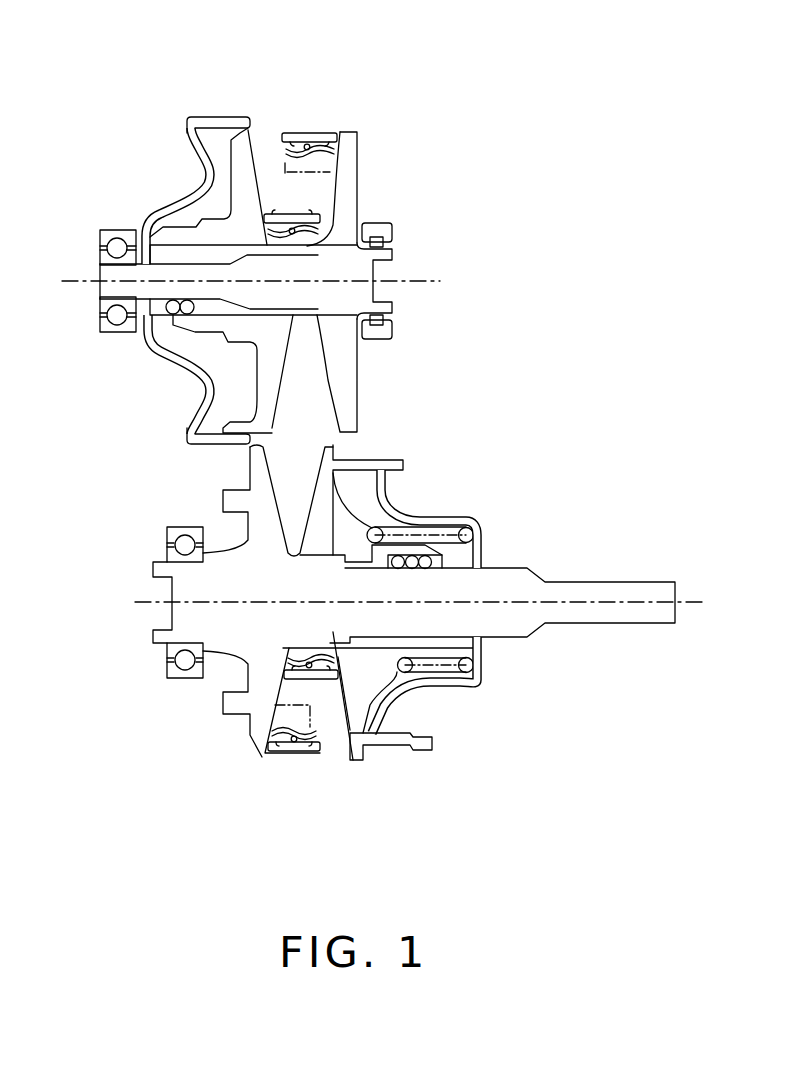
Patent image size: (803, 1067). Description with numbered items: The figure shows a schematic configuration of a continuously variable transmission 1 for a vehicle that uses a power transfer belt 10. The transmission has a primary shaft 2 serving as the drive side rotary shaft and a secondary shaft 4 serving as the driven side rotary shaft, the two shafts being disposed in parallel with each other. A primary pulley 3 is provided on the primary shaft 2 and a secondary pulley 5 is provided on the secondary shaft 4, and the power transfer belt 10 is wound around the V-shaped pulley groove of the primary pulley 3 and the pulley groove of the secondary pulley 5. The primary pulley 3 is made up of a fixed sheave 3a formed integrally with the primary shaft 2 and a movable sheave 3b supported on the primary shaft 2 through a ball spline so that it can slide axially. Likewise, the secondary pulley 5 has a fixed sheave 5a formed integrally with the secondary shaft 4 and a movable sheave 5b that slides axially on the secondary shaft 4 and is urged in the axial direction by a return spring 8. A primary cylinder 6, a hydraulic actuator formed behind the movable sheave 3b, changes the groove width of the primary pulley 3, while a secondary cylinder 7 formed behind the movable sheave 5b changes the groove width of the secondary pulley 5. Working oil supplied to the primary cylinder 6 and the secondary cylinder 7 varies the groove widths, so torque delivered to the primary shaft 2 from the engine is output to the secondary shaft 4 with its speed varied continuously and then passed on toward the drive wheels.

The continuously variable transmission 1 is at (474, 371).
The primary shaft 2 is at (102, 272).
The primary pulley 3 is at (375, 44).
The fixed sheave 3a is at (340, 155).
The movable sheave 3b is at (244, 160).
The secondary shaft 4 is at (520, 588).
The secondary pulley 5 is at (346, 842).
The fixed sheave 5a is at (248, 758).
The movable sheave 5b is at (352, 758).
The primary cylinder 6 is at (192, 195).
The secondary cylinder 7 is at (408, 698).
The return spring 8 is at (466, 532).
The power transfer belt 10 is at (320, 228).